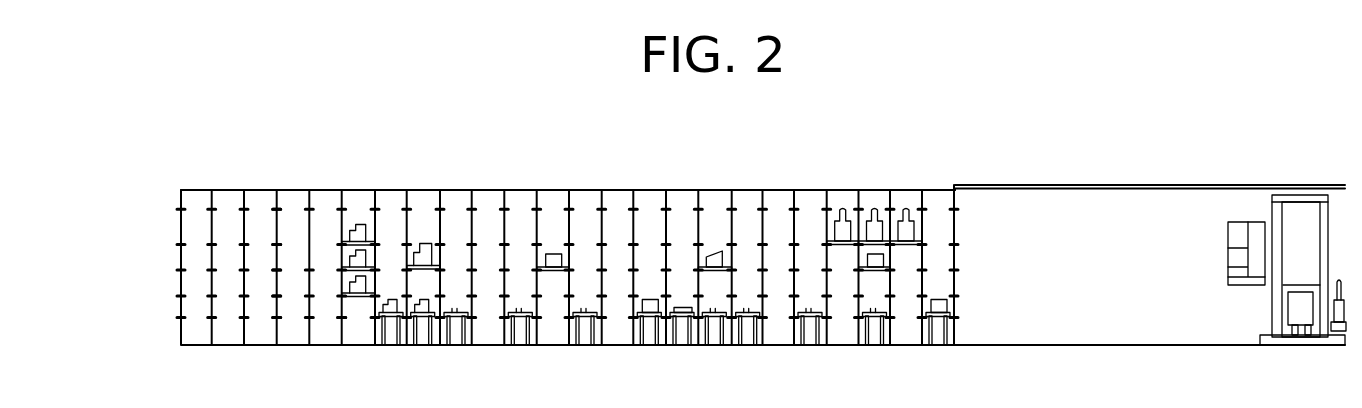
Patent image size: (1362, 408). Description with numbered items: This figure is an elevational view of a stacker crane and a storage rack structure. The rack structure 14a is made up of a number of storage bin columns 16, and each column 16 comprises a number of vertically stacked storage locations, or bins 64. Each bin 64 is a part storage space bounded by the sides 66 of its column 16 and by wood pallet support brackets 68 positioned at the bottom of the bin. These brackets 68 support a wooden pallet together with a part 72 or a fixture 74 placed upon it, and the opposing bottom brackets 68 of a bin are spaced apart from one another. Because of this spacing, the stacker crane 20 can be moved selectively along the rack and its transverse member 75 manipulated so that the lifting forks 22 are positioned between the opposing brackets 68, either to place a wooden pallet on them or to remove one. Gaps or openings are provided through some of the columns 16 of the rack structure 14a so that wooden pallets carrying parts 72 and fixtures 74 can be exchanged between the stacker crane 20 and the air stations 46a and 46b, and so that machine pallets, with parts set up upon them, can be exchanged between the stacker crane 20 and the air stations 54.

The rack structure 14a is at (277, 190).
The storage bin column 16 is at (353, 188).
The storage bin 64 is at (390, 196).
The fixture 74 is at (425, 250).
The part 72 is at (368, 262).
The wood pallet support bracket 68 is at (309, 296).
The column side 66 is at (333, 320).
The air station 46b is at (395, 318).
The air station 54 is at (518, 346).
The air station 46a is at (647, 318).
The stacker crane 20 is at (1272, 206).
The transverse member 75 is at (1298, 305).
The lifting forks 22 is at (1307, 327).